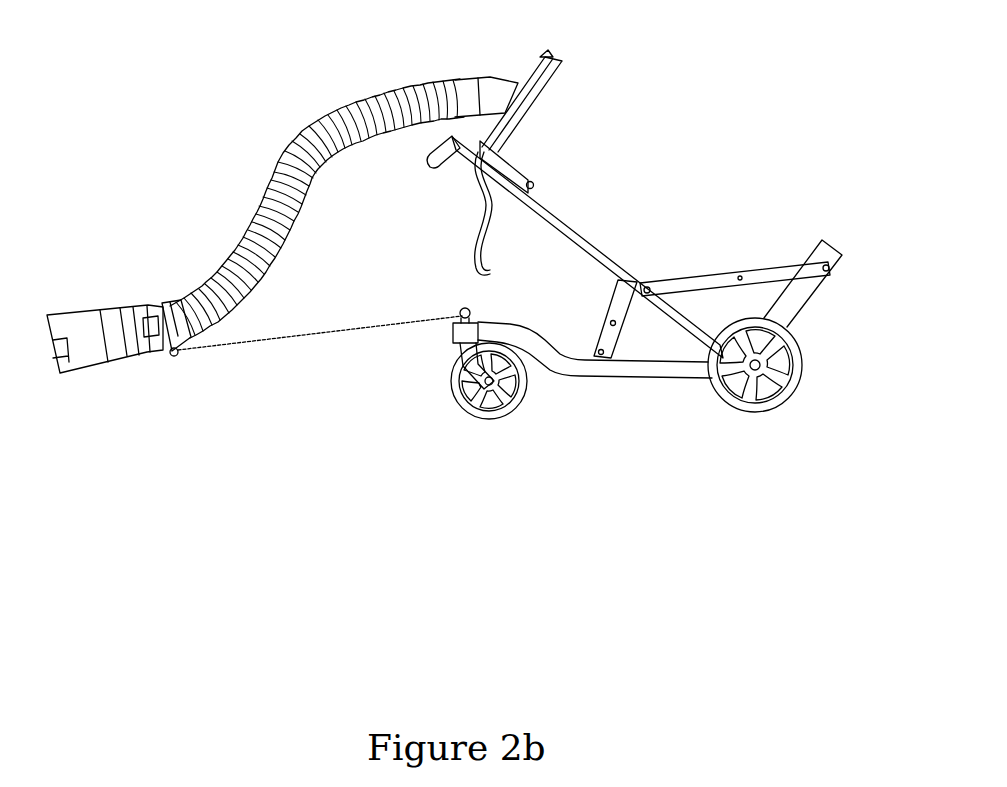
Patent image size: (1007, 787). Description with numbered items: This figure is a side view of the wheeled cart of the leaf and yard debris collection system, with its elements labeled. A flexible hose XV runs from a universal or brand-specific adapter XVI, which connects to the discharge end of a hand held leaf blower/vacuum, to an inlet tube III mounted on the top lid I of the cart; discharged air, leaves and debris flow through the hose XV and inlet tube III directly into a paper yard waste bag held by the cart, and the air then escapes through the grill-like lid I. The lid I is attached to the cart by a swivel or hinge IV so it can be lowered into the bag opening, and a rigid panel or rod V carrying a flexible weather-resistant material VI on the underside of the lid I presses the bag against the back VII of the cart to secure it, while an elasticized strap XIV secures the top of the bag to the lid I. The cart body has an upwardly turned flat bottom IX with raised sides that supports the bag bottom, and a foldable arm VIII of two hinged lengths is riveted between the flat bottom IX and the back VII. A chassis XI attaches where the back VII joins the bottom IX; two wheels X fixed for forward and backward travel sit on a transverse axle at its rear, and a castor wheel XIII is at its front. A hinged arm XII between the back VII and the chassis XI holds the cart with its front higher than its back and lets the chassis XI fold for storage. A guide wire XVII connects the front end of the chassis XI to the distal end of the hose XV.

The top lid I is at (565, 57).
The inlet tube III is at (504, 80).
The swivel or hinge IV is at (452, 137).
The panel or rod V is at (502, 160).
The flexible weather-resistant material VI is at (534, 186).
The back VII is at (565, 217).
The foldable arm VIII is at (718, 274).
The upwardly turned flat bottom IX is at (845, 247).
The wheels X is at (803, 374).
The chassis XI is at (647, 379).
The arm XII is at (610, 304).
The castor wheel XIII is at (448, 379).
The elasticized strap XIV is at (470, 243).
The hose XV is at (276, 176).
The adapter XVI is at (67, 313).
The guide wire XVII is at (220, 352).